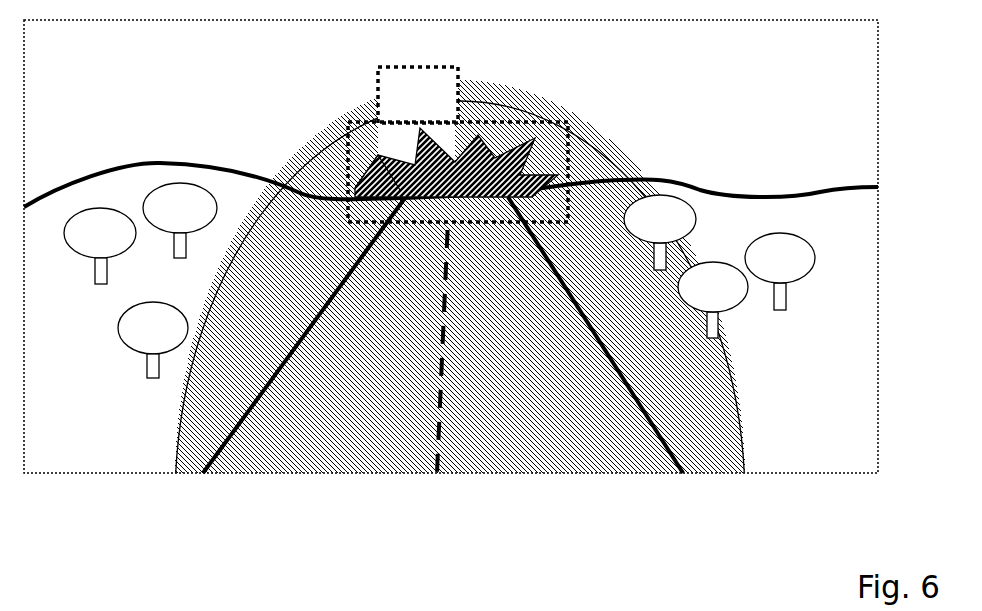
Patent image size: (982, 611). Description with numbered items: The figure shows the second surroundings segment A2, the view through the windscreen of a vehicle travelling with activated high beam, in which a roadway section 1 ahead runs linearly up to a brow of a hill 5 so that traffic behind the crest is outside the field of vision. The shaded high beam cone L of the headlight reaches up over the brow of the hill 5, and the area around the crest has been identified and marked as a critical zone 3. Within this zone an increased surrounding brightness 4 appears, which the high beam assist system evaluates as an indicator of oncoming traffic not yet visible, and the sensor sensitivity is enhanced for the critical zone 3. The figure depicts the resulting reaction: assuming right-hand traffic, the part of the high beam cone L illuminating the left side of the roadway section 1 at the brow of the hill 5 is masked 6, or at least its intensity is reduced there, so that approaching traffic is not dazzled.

The roadway section 1 is at (530, 410).
The critical zone 3 is at (535, 125).
The increased surrounding brightness 4 is at (492, 170).
The brow of the hill 5 is at (385, 178).
The masking 6 is at (378, 68).
The high beam cone L is at (175, 454).
The second surroundings segment A2 is at (100, 84).